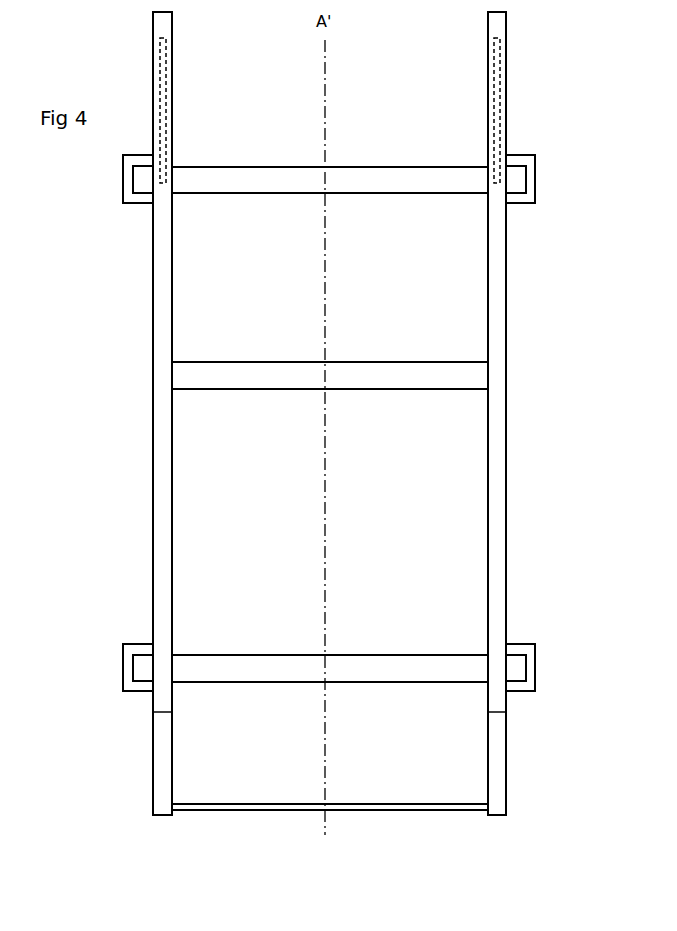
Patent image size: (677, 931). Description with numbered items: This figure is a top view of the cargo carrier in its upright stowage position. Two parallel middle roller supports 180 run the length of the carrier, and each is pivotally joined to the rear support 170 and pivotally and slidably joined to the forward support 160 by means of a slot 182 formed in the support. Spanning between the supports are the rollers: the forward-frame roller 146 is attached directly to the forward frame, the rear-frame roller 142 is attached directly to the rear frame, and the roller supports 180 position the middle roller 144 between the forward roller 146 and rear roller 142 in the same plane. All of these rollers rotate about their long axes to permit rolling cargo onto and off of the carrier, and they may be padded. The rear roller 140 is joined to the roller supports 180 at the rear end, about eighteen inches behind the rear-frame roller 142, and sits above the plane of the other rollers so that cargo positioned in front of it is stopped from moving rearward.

The rear roller 140 is at (165, 806).
The rear-frame roller 142 is at (218, 652).
The middle roller 144 is at (190, 375).
The forward-frame roller 146 is at (213, 178).
The forward support 160 is at (540, 184).
The rear support 170 is at (533, 650).
The middle roller support 180 is at (510, 307).
The slot 182 is at (512, 135).